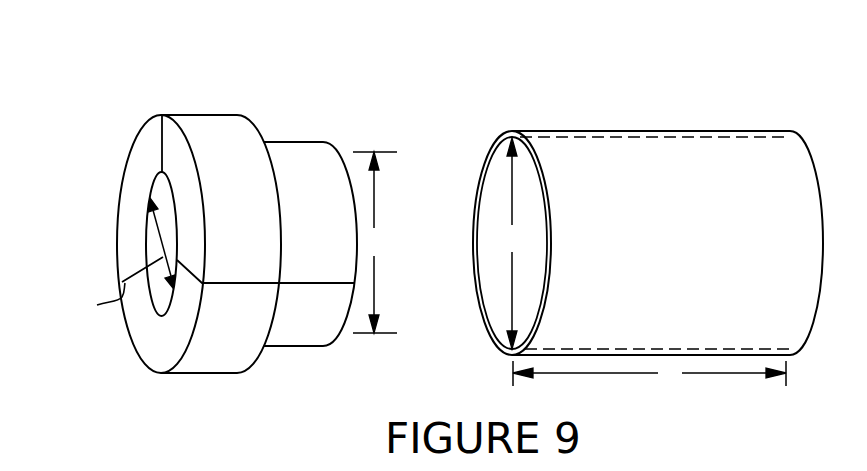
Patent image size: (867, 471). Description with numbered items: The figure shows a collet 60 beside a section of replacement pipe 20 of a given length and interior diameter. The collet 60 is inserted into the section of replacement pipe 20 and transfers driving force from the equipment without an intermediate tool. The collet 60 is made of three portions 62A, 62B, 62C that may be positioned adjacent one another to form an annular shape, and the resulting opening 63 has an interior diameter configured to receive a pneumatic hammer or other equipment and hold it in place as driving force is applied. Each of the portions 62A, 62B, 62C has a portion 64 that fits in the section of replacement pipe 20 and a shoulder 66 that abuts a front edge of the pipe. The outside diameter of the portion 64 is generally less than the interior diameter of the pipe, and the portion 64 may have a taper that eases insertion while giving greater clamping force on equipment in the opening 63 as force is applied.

The collet 60 is at (48, 113).
The portion 62A is at (227, 138).
The portion 62B is at (160, 345).
The portion 62C is at (132, 208).
The opening 63 is at (160, 181).
The portion 64 is at (325, 177).
The shoulder 66 is at (260, 125).
The replacement pipe 20 is at (632, 130).